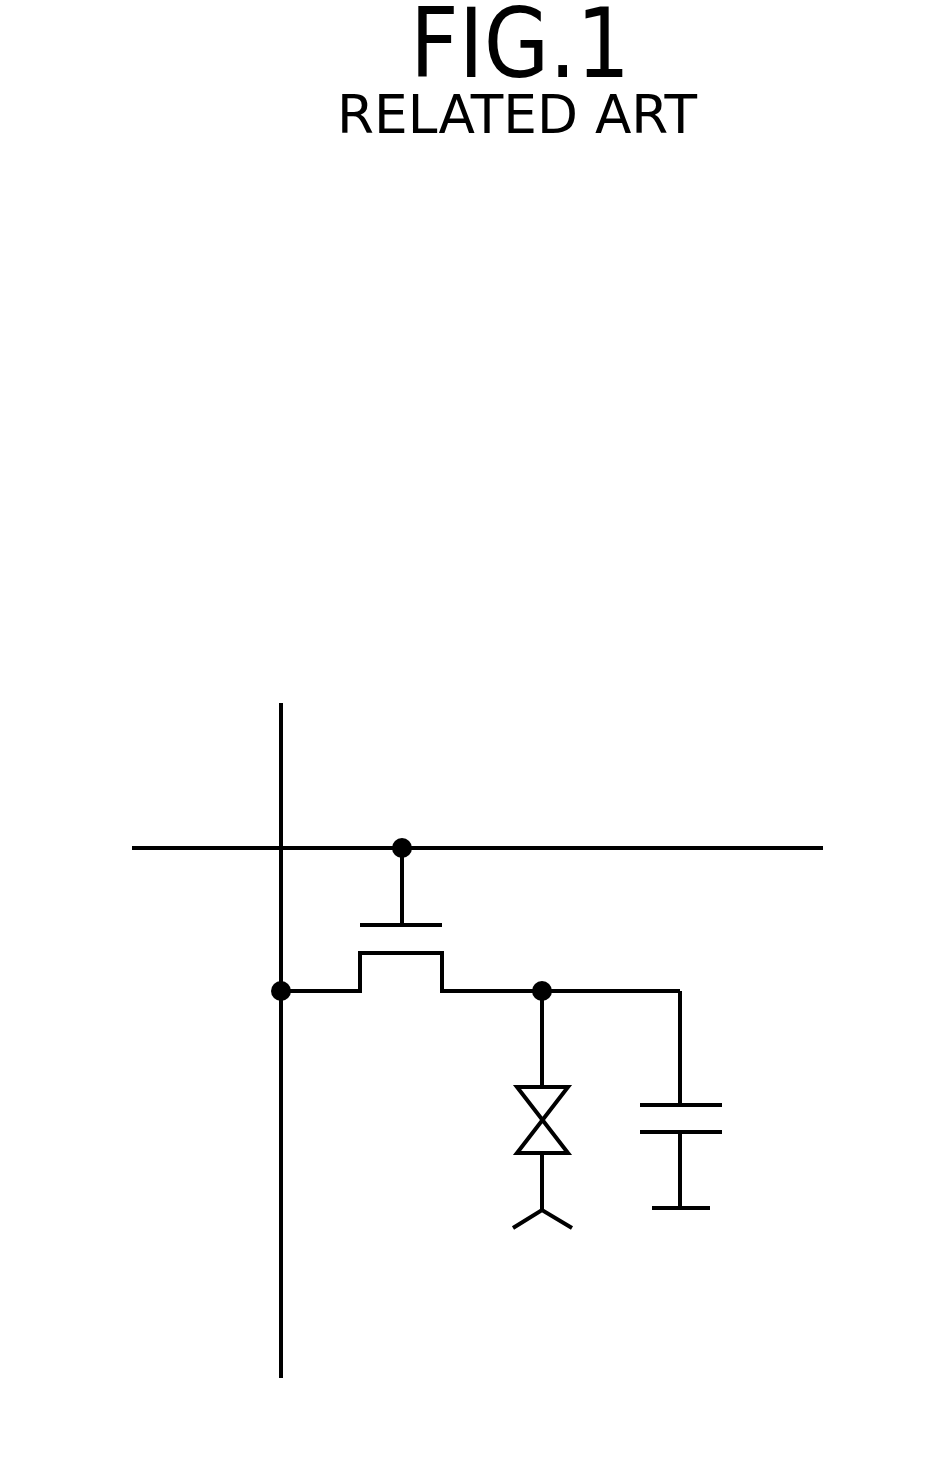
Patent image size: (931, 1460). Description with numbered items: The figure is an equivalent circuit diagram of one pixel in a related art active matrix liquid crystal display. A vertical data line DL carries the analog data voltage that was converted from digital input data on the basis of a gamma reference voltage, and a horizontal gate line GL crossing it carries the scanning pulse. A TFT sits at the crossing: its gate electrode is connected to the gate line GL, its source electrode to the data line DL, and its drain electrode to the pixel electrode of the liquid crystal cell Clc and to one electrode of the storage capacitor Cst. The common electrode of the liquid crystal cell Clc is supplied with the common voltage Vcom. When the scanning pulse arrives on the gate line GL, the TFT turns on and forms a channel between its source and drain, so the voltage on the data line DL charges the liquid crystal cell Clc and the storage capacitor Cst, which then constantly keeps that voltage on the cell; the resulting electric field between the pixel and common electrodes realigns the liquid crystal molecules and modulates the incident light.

The data line DL is at (281, 1007).
The gate line GL is at (438, 855).
The element TFT is at (480, 924).
The liquid crystal cell Clc is at (507, 1100).
The storage capacitor Cst is at (730, 1099).
The common voltage Vcom is at (547, 1247).